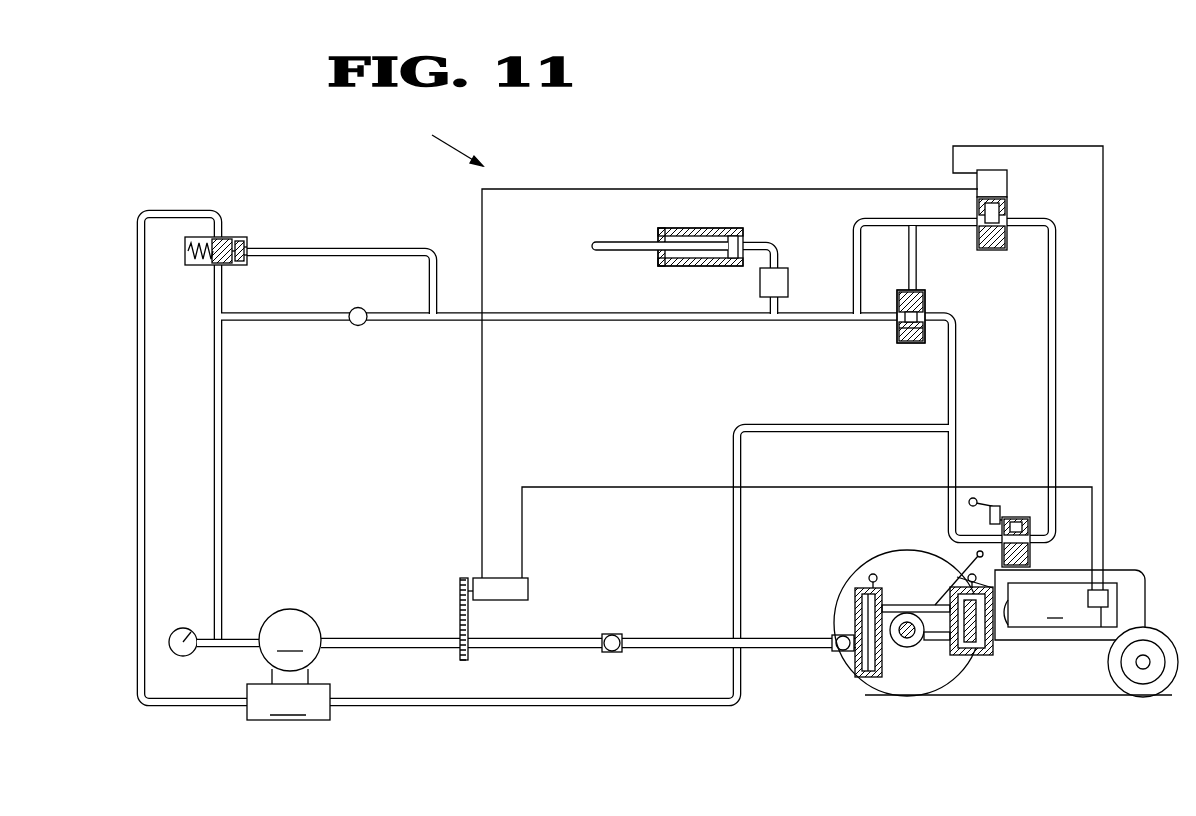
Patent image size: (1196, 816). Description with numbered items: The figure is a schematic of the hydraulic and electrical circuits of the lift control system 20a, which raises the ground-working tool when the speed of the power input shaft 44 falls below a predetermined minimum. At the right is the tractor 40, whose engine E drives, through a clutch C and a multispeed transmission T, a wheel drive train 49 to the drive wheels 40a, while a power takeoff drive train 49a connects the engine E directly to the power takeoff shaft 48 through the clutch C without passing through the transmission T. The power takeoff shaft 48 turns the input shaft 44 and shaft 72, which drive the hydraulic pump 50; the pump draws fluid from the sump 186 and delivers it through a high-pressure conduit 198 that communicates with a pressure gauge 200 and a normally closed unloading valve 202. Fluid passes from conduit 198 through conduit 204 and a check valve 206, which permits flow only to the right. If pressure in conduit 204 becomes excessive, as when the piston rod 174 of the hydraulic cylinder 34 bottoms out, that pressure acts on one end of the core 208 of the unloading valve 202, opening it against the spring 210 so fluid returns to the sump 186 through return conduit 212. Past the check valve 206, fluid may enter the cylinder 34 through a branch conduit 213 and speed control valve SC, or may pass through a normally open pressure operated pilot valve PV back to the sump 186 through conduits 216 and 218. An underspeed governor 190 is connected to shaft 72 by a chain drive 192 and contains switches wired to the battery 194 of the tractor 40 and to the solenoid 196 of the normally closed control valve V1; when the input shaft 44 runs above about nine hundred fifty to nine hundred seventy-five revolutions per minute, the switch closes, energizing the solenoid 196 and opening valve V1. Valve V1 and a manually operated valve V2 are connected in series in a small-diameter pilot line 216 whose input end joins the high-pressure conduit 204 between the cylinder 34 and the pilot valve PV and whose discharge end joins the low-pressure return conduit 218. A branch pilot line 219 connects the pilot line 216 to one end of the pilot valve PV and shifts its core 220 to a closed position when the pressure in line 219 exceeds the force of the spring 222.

The unloading valve 202 is at (240, 237).
The spring 210 is at (191, 253).
The core 208 is at (238, 264).
The conduit 204 is at (257, 313).
The check valve 206 is at (358, 323).
The return conduit 212 is at (143, 431).
The high-pressure conduit 198 is at (217, 480).
The pressure gauge 200 is at (186, 627).
The hydraulic pump 50 is at (259, 646).
The shaft 72 is at (362, 636).
The sump 186 is at (288, 702).
The underspeed governor 190 is at (528, 589).
The chain drive 192 is at (468, 622).
The return conduit 218 is at (733, 515).
The power input shaft 44 is at (770, 637).
The power takeoff shaft 48 is at (857, 665).
The drive wheels 40a is at (887, 690).
The wheel drive train 49 is at (928, 642).
The power takeoff drive train 49a is at (912, 605).
The multispeed transmission T is at (976, 655).
The clutch C is at (1010, 620).
The battery 194 is at (1106, 590).
The tractor 40 is at (1137, 603).
The manually operated valve V2 is at (1030, 515).
The pilot line 216 is at (947, 458).
The spring 222 is at (912, 343).
The core 220 is at (926, 305).
The branch pilot line 219 is at (918, 270).
The pilot valve PV is at (897, 293).
The solenoid 196 is at (1008, 180).
The control valve V1 is at (1008, 215).
The hydraulic cylinder 34 is at (680, 228).
The branch conduit 213 is at (775, 244).
The piston rod 174 is at (599, 252).
The speed control valve SC is at (760, 287).
The engine E is at (1055, 607).
The lift control system 20a is at (447, 138).